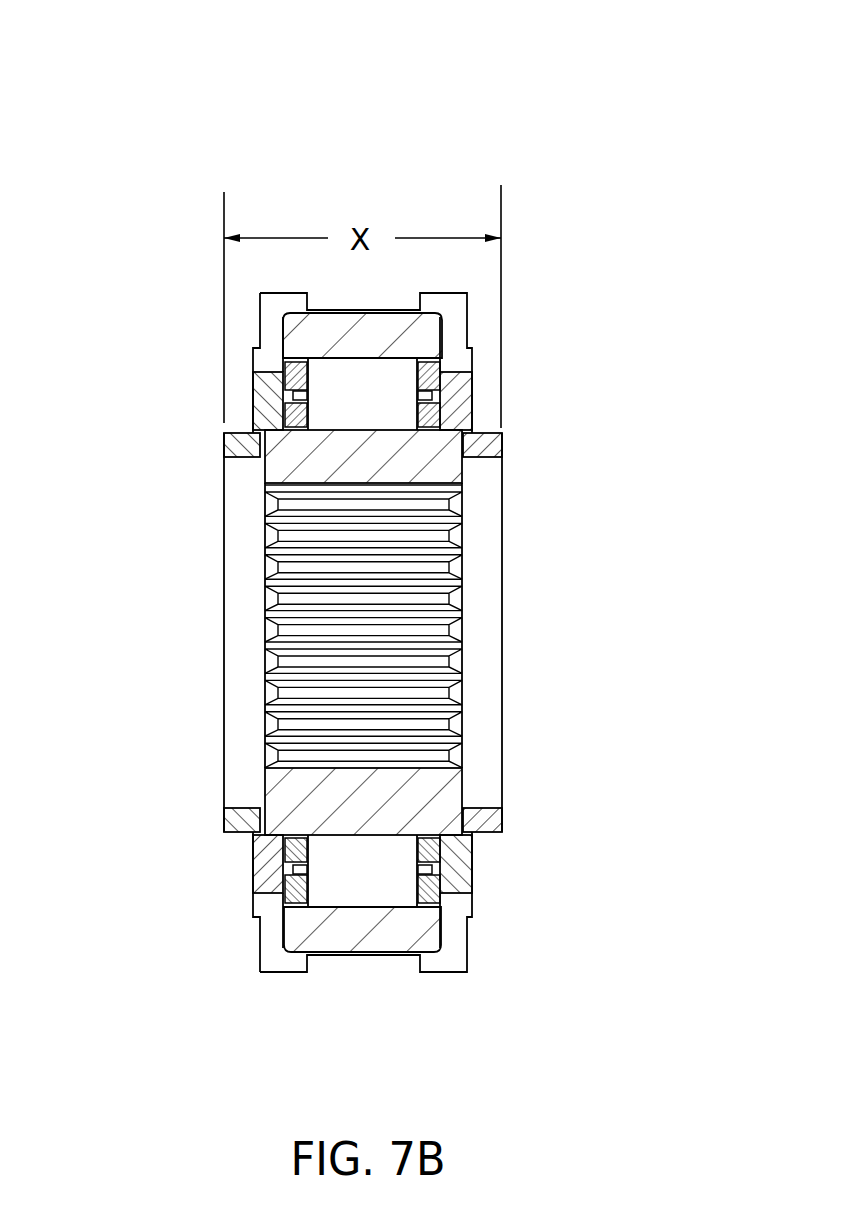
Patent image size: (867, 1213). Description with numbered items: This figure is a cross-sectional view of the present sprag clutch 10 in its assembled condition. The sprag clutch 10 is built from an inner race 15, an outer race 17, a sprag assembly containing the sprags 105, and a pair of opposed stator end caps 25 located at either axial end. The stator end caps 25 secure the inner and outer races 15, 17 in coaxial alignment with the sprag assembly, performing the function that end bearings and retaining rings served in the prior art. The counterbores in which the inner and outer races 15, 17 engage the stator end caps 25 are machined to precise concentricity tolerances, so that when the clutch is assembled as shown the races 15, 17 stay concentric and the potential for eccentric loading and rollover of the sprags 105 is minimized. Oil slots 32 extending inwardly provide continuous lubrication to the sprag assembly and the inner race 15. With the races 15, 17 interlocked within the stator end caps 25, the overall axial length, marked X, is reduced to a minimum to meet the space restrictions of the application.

The sprag clutch 10 is at (345, 80).
The inner race 15 is at (320, 472).
The outer race 17 is at (340, 948).
The stator end caps 25 is at (208, 620).
The oil slots 32 is at (460, 942).
The sprags 105 is at (403, 418).